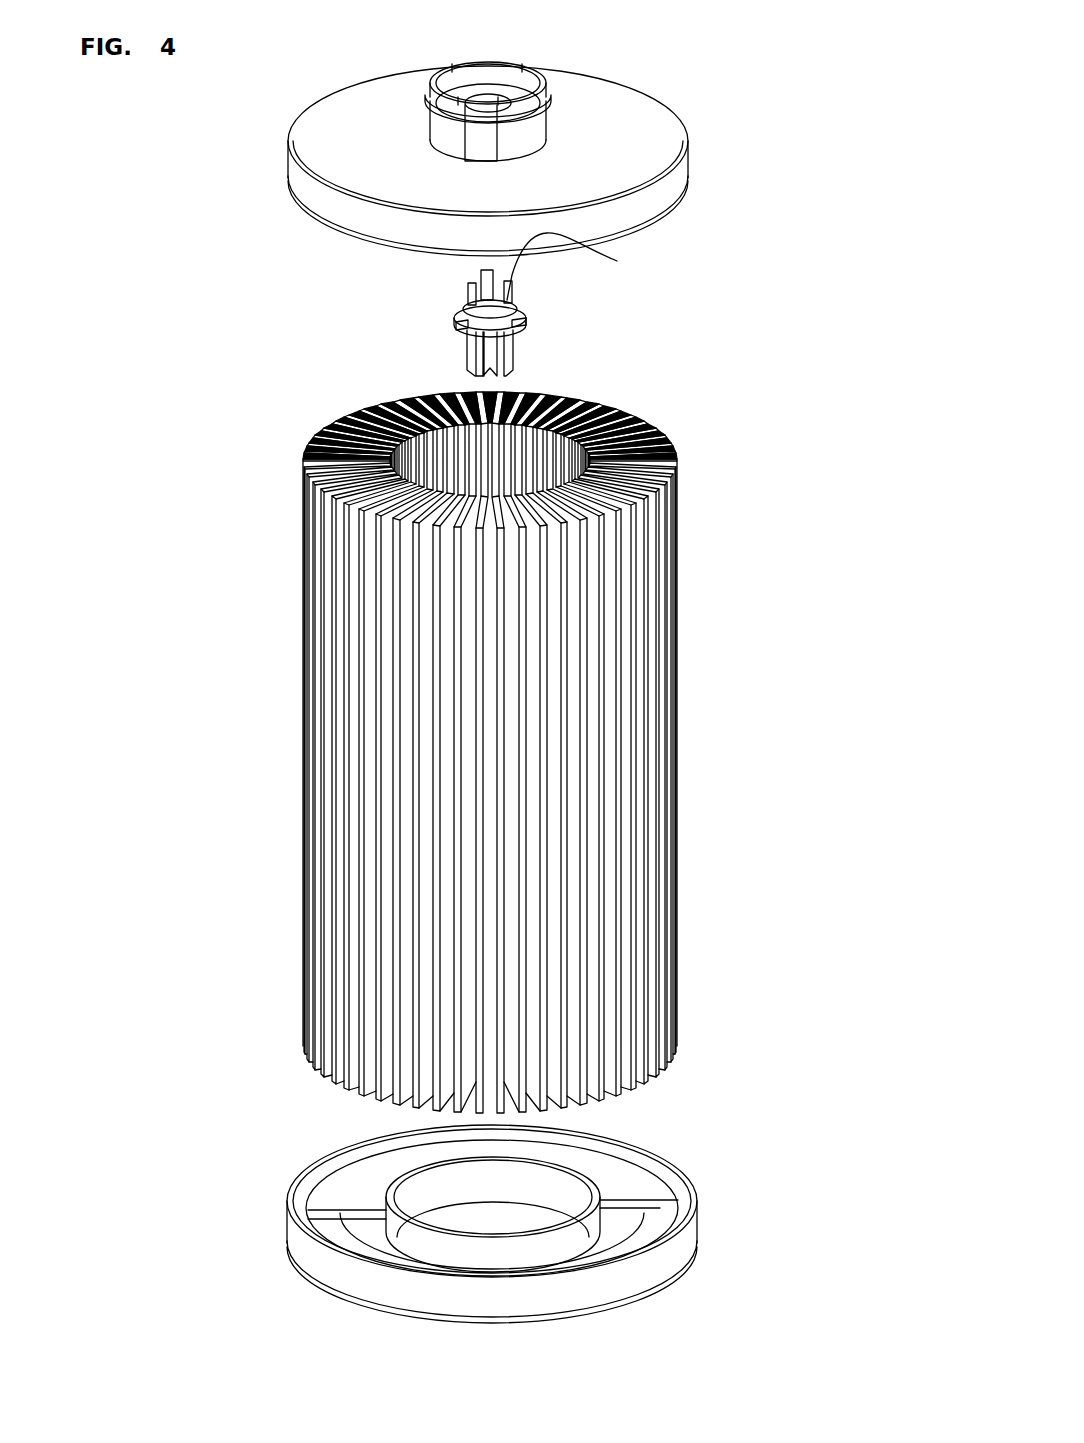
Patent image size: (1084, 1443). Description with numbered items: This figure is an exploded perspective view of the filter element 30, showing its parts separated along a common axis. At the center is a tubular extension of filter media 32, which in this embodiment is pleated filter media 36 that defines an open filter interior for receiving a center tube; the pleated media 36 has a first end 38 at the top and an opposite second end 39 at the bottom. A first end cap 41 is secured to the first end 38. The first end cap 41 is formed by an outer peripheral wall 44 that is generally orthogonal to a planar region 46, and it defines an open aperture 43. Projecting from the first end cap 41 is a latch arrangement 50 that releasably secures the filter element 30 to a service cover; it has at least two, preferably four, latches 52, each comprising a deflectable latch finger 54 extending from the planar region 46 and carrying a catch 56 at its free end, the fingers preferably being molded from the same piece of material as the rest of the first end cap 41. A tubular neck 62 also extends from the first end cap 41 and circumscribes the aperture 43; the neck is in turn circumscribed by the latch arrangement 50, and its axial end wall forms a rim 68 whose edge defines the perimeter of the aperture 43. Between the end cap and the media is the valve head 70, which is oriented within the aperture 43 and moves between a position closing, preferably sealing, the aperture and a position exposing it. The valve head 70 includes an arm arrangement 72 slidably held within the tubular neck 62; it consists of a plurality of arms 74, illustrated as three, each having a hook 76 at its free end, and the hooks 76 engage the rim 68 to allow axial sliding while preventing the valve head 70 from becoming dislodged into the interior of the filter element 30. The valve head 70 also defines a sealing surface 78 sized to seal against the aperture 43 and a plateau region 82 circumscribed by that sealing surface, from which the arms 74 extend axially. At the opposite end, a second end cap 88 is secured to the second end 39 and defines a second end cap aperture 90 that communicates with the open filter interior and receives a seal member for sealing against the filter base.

The filter element 30 is at (785, 139).
The filter media 32 is at (678, 612).
The pleated filter media 36 is at (679, 690).
The first end 38 is at (662, 442).
The second end 39 is at (647, 1080).
The first end cap 41 is at (315, 110).
The first end cap open aperture 43 is at (489, 96).
The outer peripheral wall 44 is at (295, 190).
The planar region 46 is at (667, 128).
The latch arrangement 50 is at (537, 62).
The latches 52 is at (455, 75).
The latch finger 54 is at (433, 127).
The catch 56 is at (425, 95).
The tubular neck 62 is at (480, 143).
The rim 68 is at (470, 98).
The valve head 70 is at (585, 325).
The arm arrangement 72 is at (449, 297).
The arms 74 is at (478, 274).
The hook 76 is at (511, 283).
The sealing surface 78 is at (460, 320).
The plateau region 82 is at (578, 266).
The second end cap 88 is at (695, 1242).
The second end cap aperture 90 is at (450, 1213).